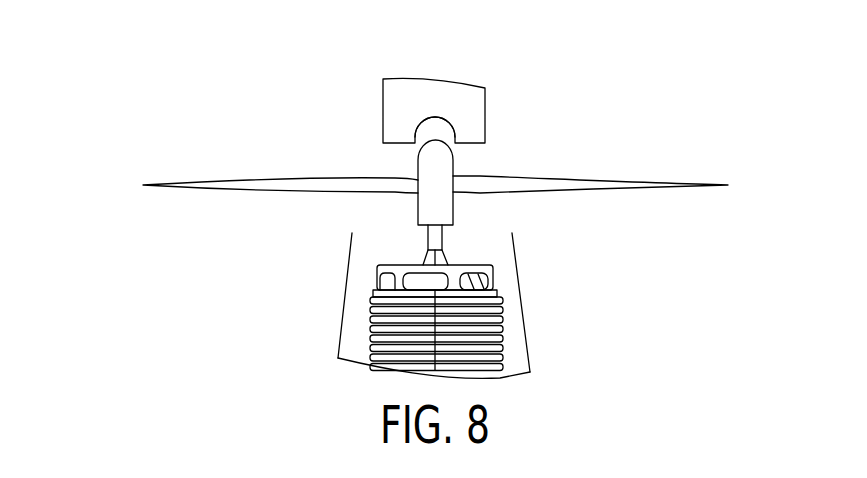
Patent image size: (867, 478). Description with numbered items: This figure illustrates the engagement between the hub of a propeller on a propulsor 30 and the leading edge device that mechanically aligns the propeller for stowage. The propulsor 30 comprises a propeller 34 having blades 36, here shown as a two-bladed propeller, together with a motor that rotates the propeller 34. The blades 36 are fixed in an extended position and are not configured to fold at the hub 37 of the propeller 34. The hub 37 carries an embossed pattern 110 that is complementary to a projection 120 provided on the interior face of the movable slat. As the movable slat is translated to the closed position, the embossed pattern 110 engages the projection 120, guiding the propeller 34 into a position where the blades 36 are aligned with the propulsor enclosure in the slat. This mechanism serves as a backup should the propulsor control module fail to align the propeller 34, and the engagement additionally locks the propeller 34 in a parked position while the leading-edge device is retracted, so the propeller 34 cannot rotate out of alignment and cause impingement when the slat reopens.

The propulsor 30 is at (383, 254).
The propeller 34 is at (435, 159).
The blades 36 is at (312, 187).
The hub 37 is at (440, 198).
The embossed pattern 110 is at (435, 120).
The projection 120 is at (457, 100).